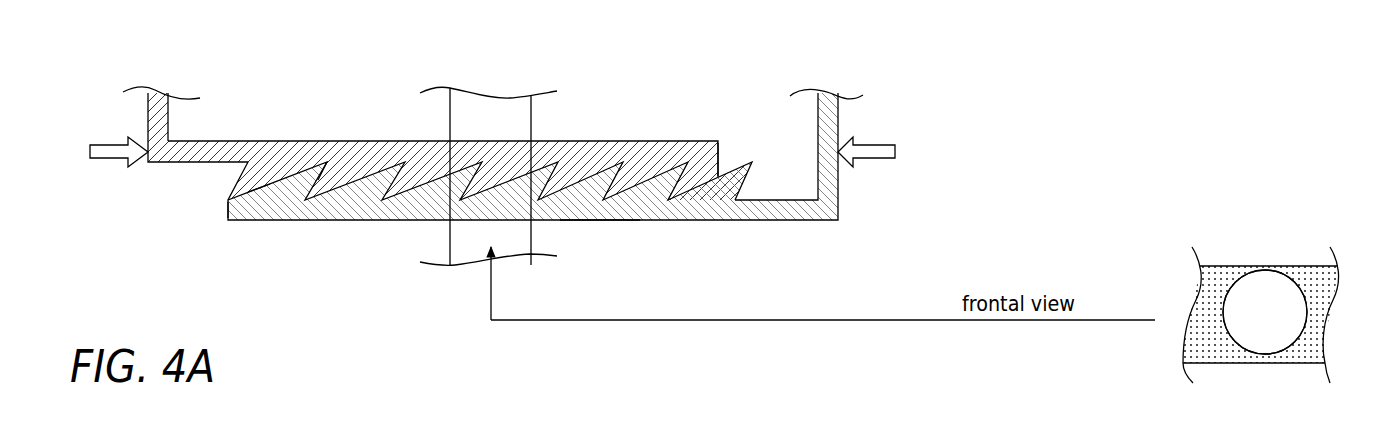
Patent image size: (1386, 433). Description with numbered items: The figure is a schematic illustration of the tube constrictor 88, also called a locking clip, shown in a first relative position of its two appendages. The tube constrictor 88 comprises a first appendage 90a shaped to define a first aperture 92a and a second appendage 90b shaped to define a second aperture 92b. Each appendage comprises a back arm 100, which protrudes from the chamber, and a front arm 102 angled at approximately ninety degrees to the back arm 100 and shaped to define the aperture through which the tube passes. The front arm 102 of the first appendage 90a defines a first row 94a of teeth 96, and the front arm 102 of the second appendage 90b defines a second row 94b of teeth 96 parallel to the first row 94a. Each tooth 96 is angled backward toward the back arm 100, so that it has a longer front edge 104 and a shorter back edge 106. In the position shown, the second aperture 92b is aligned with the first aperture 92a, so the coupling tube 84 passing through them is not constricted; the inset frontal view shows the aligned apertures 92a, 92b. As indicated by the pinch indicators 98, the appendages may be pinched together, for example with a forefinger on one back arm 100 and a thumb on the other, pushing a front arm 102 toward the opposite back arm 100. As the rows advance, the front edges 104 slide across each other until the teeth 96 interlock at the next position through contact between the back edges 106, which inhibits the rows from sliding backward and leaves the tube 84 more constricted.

The tube constrictor 88 is at (202, 63).
The back arm 100 is at (148, 110).
The pinch indicators 98 is at (90, 148).
The first row 94a is at (222, 209).
The second row 94b is at (737, 150).
The teeth 96 is at (700, 170).
The coupling tube 84 is at (450, 108).
The second appendage 90b is at (597, 141).
The first appendage 90a is at (675, 220).
The front arm 102 is at (602, 220).
The front edge 104 is at (268, 188).
The back edge 106 is at (325, 183).
The first aperture 92a is at (1287, 308).
The second aperture 92b is at (1283, 341).